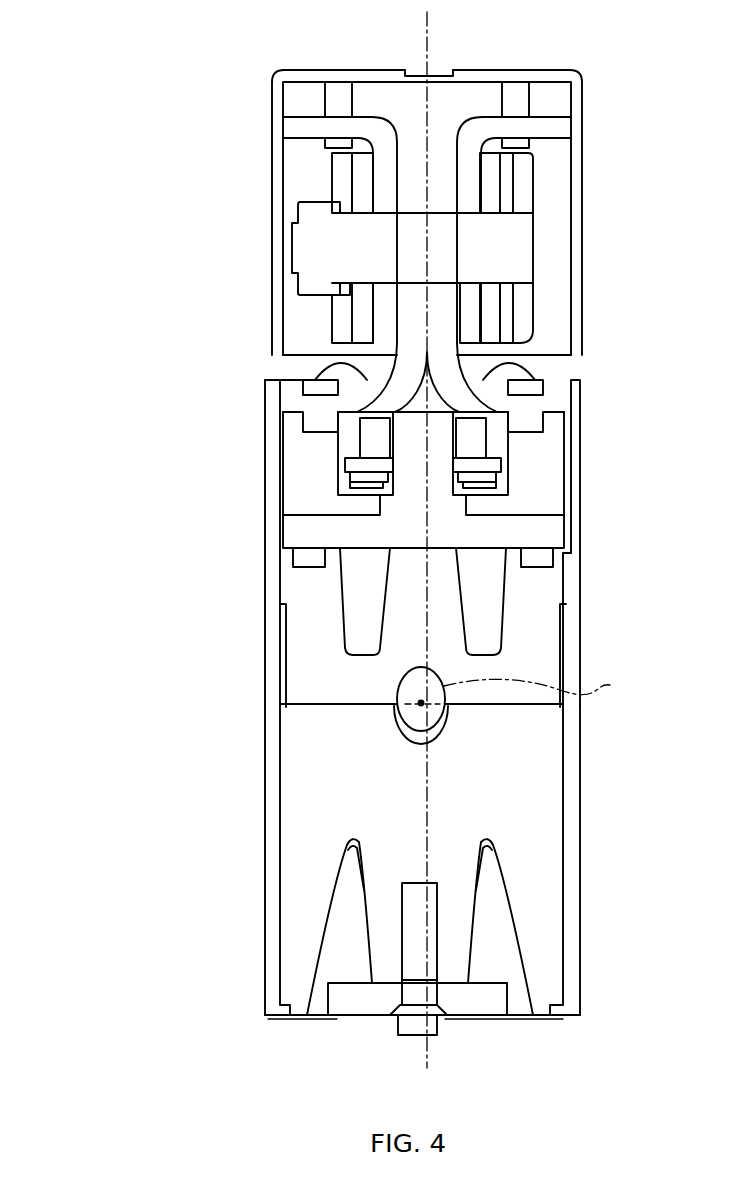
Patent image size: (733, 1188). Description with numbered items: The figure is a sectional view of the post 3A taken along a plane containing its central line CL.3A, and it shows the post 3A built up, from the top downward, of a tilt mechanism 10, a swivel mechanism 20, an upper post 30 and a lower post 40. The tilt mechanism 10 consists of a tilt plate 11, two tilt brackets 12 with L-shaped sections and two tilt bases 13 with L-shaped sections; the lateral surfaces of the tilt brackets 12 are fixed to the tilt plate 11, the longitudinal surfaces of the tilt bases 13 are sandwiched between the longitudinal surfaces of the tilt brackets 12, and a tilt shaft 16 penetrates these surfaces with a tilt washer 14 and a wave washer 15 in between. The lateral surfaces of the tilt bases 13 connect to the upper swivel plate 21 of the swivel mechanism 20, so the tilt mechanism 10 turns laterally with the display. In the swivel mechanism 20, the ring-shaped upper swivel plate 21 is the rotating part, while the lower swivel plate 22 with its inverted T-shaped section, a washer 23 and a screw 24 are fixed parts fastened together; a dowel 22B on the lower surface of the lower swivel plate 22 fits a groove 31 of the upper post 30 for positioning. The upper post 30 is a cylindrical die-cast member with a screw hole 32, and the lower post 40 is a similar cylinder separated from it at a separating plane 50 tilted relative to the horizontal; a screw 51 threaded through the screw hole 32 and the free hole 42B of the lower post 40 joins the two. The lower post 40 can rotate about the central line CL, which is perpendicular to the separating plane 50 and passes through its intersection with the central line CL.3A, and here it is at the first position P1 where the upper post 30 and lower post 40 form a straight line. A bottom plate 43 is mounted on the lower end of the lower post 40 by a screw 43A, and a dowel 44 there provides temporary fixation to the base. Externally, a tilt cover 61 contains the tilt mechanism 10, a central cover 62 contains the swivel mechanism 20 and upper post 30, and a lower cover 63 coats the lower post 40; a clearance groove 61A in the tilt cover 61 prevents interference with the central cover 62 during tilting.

The post 3A is at (584, 52).
The central line of the post CL.3A is at (430, 45).
The tilt mechanism 10 is at (272, 70).
The tilt plate 11 is at (548, 103).
The tilt bracket 12 is at (300, 122).
The tilt base 13 is at (360, 163).
The tilt washer 14 is at (490, 190).
The wave washer 15 is at (345, 189).
The tilt shaft 16 is at (503, 245).
The tilt cover 61 is at (584, 300).
The clearance groove 61A is at (584, 361).
The swivel mechanism 20 is at (265, 413).
The upper swivel plate 21 is at (548, 438).
The lower swivel plate 22 is at (553, 528).
The dowel 22B is at (300, 566).
The washer 23 is at (487, 471).
The screw 24 is at (553, 421).
The upper post 30 is at (265, 552).
The groove 31 is at (310, 572).
The screw hole 32 is at (421, 703).
The separating plane 50 is at (296, 698).
The screw 51 is at (396, 714).
The central line of the upper post CL is at (540, 683).
The central cover 62 is at (582, 627).
The lower post 40 is at (265, 705).
The free hole 42B is at (445, 726).
The lower cover 63 is at (570, 820).
The bottom plate 43 is at (490, 1006).
The screw 43A is at (445, 1015).
The dowel 44 is at (411, 1036).
The first position P1 is at (592, 911).